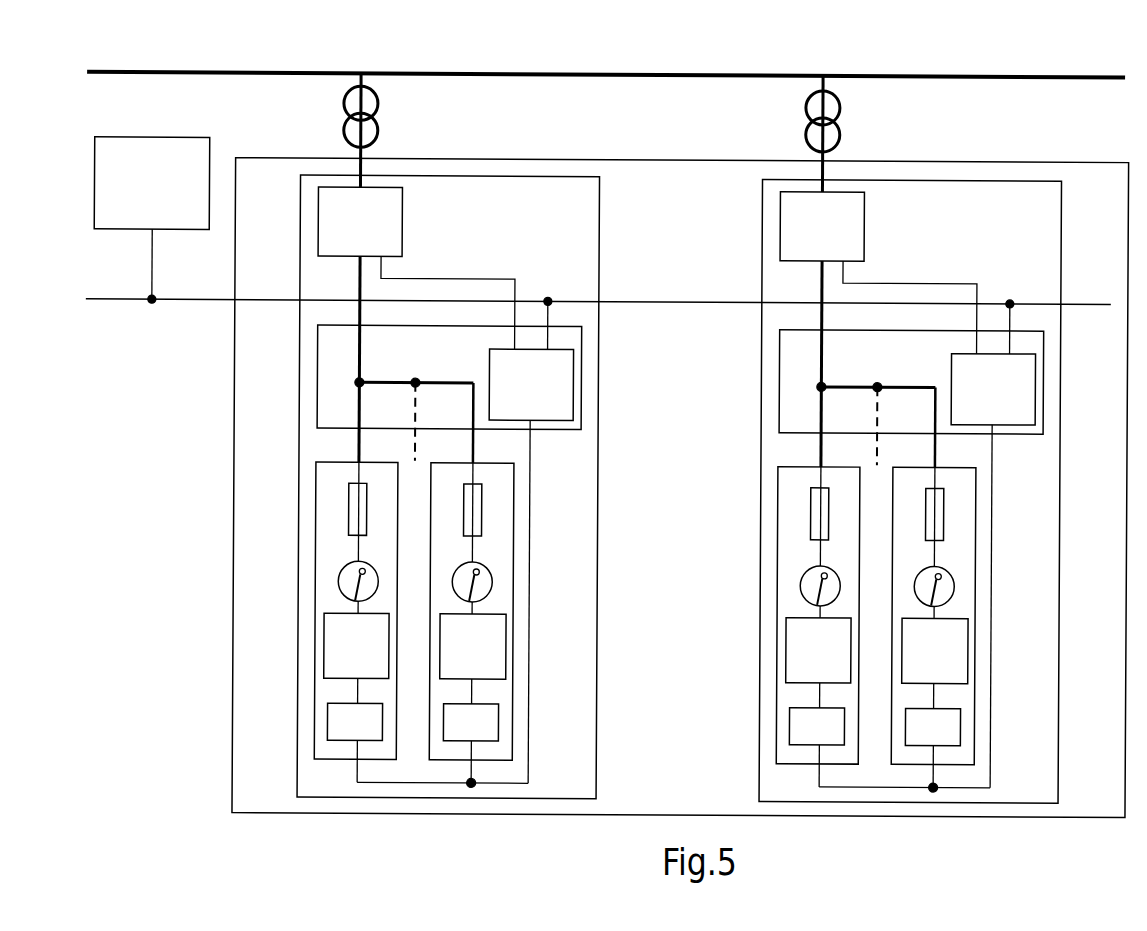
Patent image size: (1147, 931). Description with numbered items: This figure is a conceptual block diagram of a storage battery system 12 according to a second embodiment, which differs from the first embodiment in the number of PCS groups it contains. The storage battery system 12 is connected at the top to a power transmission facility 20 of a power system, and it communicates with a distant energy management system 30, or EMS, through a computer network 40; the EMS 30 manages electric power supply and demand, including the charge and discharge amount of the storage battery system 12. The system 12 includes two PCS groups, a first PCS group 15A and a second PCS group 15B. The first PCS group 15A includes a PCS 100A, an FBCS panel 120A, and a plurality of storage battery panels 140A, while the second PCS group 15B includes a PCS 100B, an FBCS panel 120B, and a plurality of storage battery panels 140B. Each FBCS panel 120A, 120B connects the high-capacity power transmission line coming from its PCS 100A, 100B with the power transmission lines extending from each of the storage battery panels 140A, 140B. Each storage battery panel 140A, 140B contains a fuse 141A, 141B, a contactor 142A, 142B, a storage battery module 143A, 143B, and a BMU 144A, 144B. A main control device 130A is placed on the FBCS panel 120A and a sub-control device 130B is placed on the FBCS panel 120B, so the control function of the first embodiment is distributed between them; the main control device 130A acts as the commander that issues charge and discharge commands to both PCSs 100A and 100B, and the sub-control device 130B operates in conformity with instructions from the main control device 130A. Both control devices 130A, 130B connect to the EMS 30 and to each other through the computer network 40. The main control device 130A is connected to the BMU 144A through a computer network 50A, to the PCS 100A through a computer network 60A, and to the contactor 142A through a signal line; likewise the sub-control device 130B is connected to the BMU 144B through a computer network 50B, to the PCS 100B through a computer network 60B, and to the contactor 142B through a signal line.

The storage battery system 12 is at (678, 158).
The power transmission facility 20 is at (494, 73).
The energy management system (EMS) 30 is at (153, 138).
The computer network 40 is at (197, 300).
The first PCS group 15A is at (598, 243).
The second PCS group 15B is at (761, 214).
The PCS 100A is at (401, 207).
The PCS 100B is at (863, 206).
The computer network 60A is at (456, 278).
The computer network 60B is at (918, 280).
The FBCS panel 120A is at (317, 378).
The FBCS panel 120B is at (779, 380).
The main control device 130A is at (573, 383).
The sub-control device 130B is at (1035, 385).
The storage battery panel 140A is at (326, 462).
The storage battery panel 140B is at (788, 464).
The fuse 141A is at (348, 510).
The fuse 141B is at (811, 512).
The contactor 142A is at (340, 571).
The contactor 142B is at (802, 573).
The storage battery module 143A is at (325, 640).
The storage battery module 143B is at (787, 642).
The BMU 144A is at (329, 722).
The BMU 144B is at (791, 724).
The computer network 50A is at (532, 597).
The computer network 50B is at (994, 599).